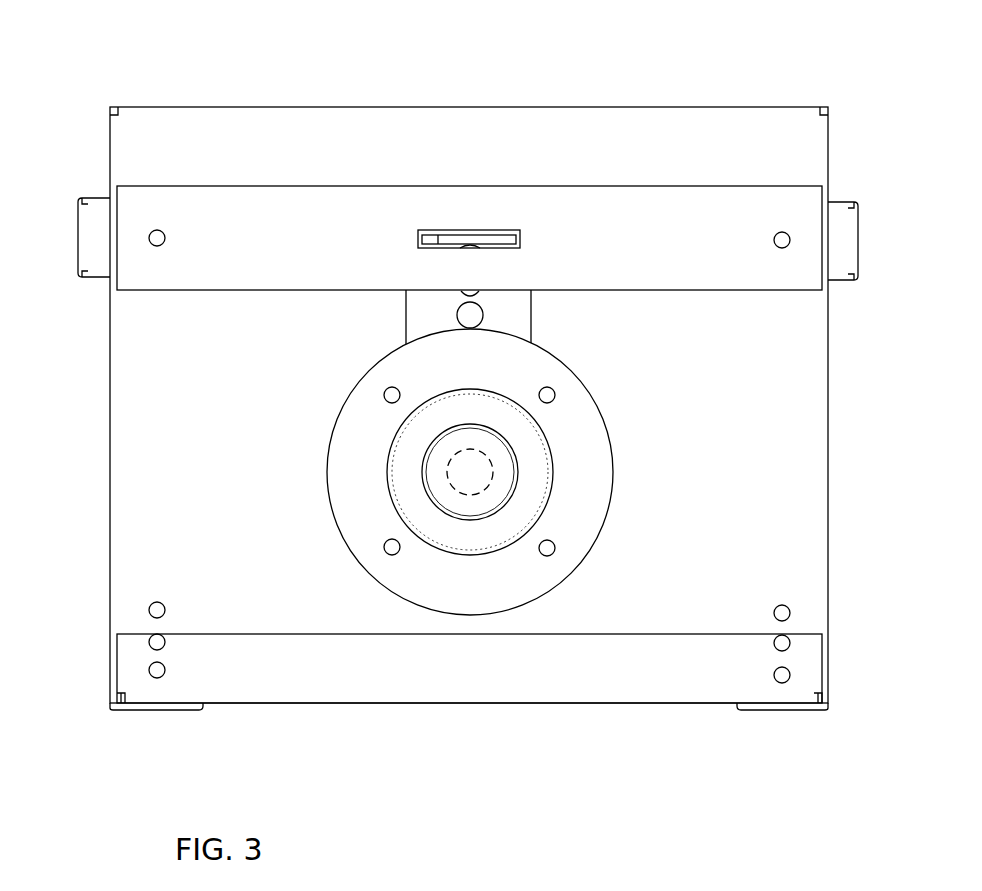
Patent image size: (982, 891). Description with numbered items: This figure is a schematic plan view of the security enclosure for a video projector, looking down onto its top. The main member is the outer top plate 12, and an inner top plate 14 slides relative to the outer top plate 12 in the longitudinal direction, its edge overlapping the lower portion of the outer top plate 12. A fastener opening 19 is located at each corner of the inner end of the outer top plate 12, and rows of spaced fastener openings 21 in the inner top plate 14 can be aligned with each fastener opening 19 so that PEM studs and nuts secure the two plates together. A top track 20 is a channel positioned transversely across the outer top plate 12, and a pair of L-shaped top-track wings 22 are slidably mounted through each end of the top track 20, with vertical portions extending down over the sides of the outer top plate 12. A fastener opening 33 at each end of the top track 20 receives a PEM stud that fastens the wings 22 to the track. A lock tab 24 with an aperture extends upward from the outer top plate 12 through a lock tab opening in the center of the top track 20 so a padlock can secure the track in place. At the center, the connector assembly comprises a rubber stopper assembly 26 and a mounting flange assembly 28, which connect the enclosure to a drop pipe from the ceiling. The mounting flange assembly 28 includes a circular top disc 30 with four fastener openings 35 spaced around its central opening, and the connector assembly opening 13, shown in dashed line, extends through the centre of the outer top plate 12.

The outer top plate 12 is at (133, 473).
The connector assembly opening 13 is at (470, 482).
The inner top plate 14 is at (250, 678).
The fastener opening 19 is at (789, 617).
The top track 20 is at (641, 238).
The fastener openings 21 is at (789, 675).
The top-track wings 22 is at (96, 226).
The lock tab 24 is at (497, 236).
The rubber stopper assembly 26 is at (430, 506).
The mounting flange assembly 28 is at (549, 498).
The top disc 30 is at (430, 583).
The fastener opening 33 is at (150, 243).
The fastener openings 35 is at (547, 558).